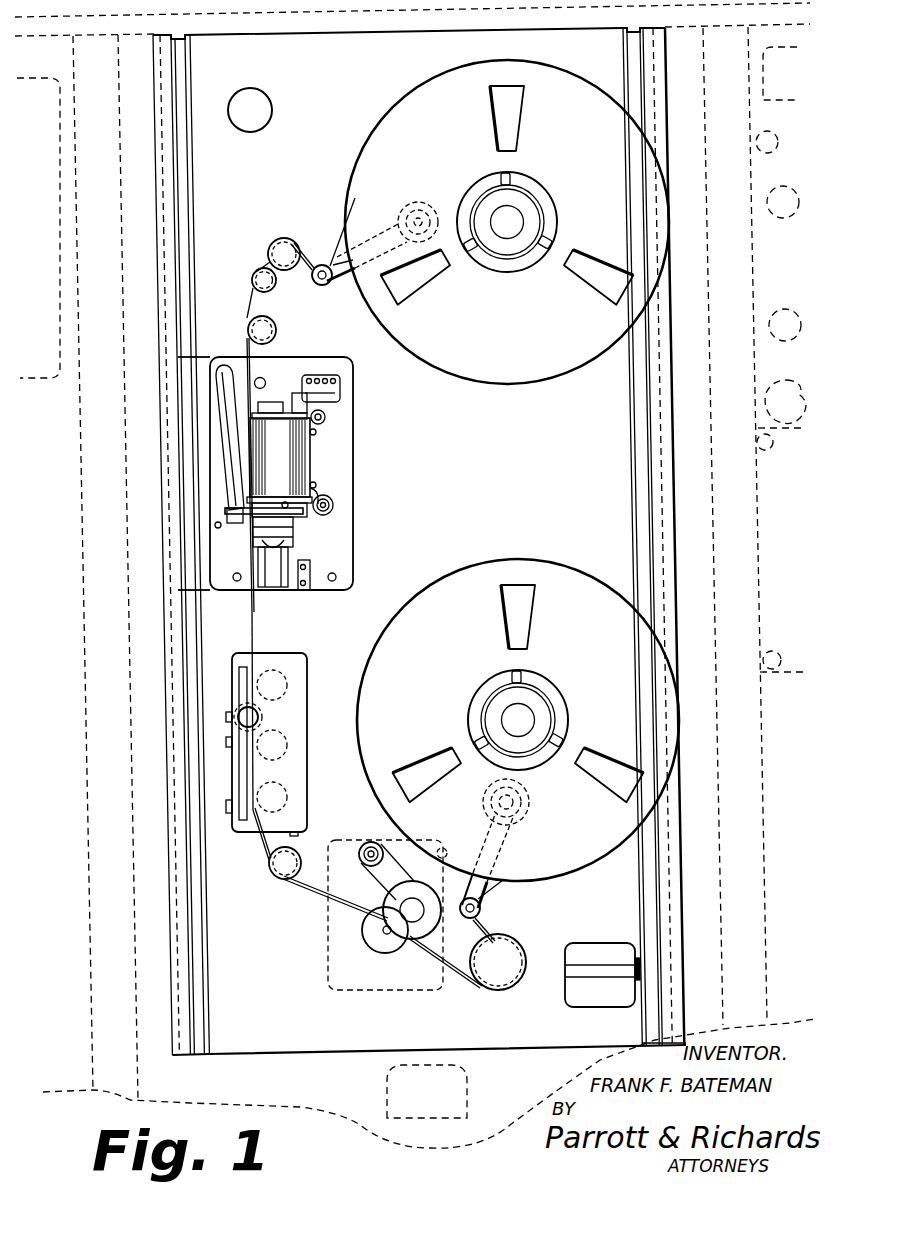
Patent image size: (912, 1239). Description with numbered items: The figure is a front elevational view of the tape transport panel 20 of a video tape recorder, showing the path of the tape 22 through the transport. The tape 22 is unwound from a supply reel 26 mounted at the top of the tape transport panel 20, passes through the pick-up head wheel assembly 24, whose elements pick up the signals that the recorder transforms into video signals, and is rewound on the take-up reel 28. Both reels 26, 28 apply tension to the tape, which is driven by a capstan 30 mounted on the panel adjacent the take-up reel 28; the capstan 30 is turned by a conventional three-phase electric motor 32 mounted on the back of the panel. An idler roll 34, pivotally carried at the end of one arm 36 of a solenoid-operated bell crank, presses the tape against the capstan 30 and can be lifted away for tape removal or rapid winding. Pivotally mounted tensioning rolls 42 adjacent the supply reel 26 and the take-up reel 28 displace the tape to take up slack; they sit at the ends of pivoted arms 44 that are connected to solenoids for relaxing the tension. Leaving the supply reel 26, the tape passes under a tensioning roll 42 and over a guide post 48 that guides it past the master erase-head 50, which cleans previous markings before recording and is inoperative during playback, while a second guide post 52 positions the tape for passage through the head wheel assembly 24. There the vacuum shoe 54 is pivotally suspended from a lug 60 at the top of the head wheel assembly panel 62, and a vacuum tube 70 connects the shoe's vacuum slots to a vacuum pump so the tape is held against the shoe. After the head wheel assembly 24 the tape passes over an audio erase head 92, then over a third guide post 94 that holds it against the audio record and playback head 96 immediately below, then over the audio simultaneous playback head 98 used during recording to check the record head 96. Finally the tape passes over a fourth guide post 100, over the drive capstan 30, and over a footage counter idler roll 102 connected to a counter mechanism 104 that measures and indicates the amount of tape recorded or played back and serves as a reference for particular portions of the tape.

The tape transport panel 20 is at (513, 474).
The tape 22 is at (253, 632).
The pick-up head wheel assembly 24 is at (316, 482).
The supply reel 26 is at (537, 351).
The take-up reel 28 is at (595, 831).
The capstan 30 is at (374, 944).
The electric motor 32 is at (327, 938).
The idler roll 34 is at (414, 888).
The arm 36 is at (374, 866).
The tensioning rolls 42 is at (330, 284).
The pivoted arms 44 is at (331, 262).
The guide post 48 is at (291, 249).
The master erase-head 50 is at (273, 288).
The guide roller 52 is at (278, 331).
The vacuum shoe 54 is at (226, 521).
The lug 60 is at (263, 379).
The head wheel assembly panel 62 is at (343, 533).
The vacuum tube 70 is at (226, 409).
The audio erase head 92 is at (292, 680).
The third guide post 94 is at (259, 721).
The audio record and playback head 96 is at (290, 740).
The audio simultaneous playback head 98 is at (292, 796).
The fourth guide post 100 is at (279, 879).
The footage counter idler roll 102 is at (503, 986).
The counter mechanism 104 is at (580, 950).